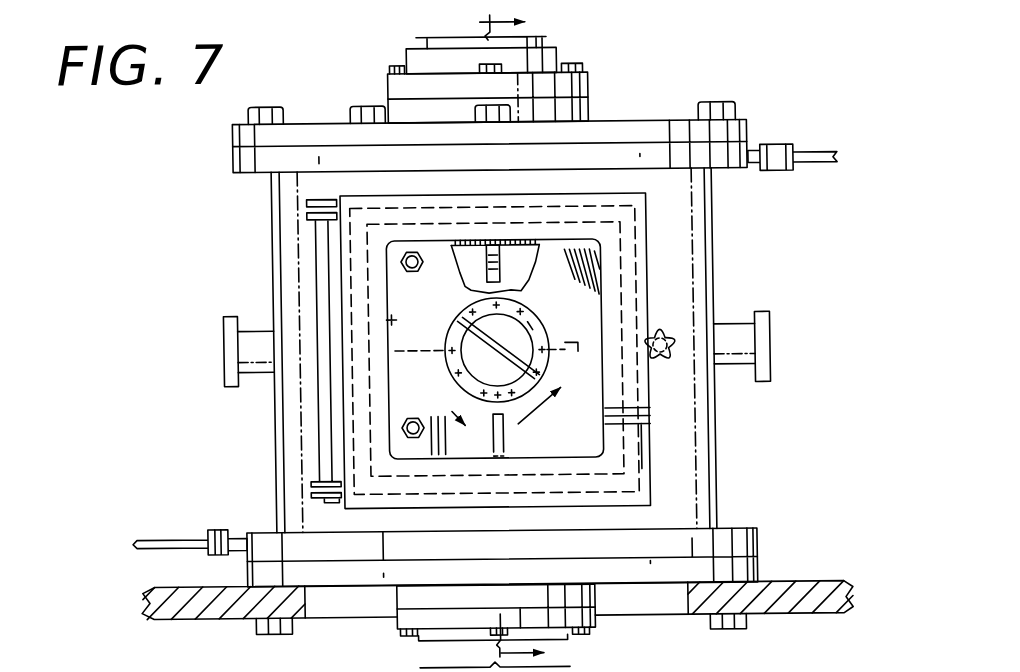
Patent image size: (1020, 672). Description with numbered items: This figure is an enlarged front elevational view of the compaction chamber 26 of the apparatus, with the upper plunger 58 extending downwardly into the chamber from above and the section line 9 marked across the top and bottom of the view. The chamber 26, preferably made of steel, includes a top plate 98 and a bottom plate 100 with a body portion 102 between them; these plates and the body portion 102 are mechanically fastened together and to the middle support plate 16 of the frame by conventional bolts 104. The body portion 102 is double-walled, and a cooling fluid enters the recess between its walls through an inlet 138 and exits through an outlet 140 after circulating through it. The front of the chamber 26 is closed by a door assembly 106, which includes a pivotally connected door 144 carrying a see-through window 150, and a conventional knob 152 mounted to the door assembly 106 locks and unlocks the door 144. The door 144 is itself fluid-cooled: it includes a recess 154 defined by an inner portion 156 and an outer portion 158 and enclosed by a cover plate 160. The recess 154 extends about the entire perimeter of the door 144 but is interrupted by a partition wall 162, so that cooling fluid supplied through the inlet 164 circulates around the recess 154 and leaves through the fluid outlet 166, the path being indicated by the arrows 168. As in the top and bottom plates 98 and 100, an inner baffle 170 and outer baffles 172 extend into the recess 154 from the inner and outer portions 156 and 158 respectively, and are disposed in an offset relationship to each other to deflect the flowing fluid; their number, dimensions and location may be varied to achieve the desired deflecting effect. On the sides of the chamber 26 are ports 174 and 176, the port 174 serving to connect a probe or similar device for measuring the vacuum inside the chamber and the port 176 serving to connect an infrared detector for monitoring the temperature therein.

The section line 9- 9 is at (491, 338).
The middle support plate 16 is at (831, 597).
The compaction chamber 26 is at (175, 213).
The upper plunger 58 is at (551, 37).
The top plate 98 is at (682, 121).
The bottom plate 100 is at (757, 570).
The body portion 102 is at (717, 254).
The bolts 104 is at (361, 106).
The door assembly 106 is at (652, 240).
The inlet 138 is at (155, 530).
The outlet 140 is at (821, 151).
The door 144 is at (651, 477).
The see-through window 150 is at (478, 357).
The knob 152 is at (673, 334).
The recess 154 is at (465, 262).
The inner portion 156 is at (508, 268).
The outer portion 158 is at (597, 379).
The cover plate 160 is at (392, 319).
The partition wall 162 is at (398, 365).
The inlet 164 is at (396, 261).
The fluid outlet 166 is at (399, 437).
The arrows 168 is at (521, 240).
The inner baffle 170 is at (563, 343).
The outer baffles 172 is at (471, 240).
The port 174 is at (223, 338).
The port 176 is at (770, 346).